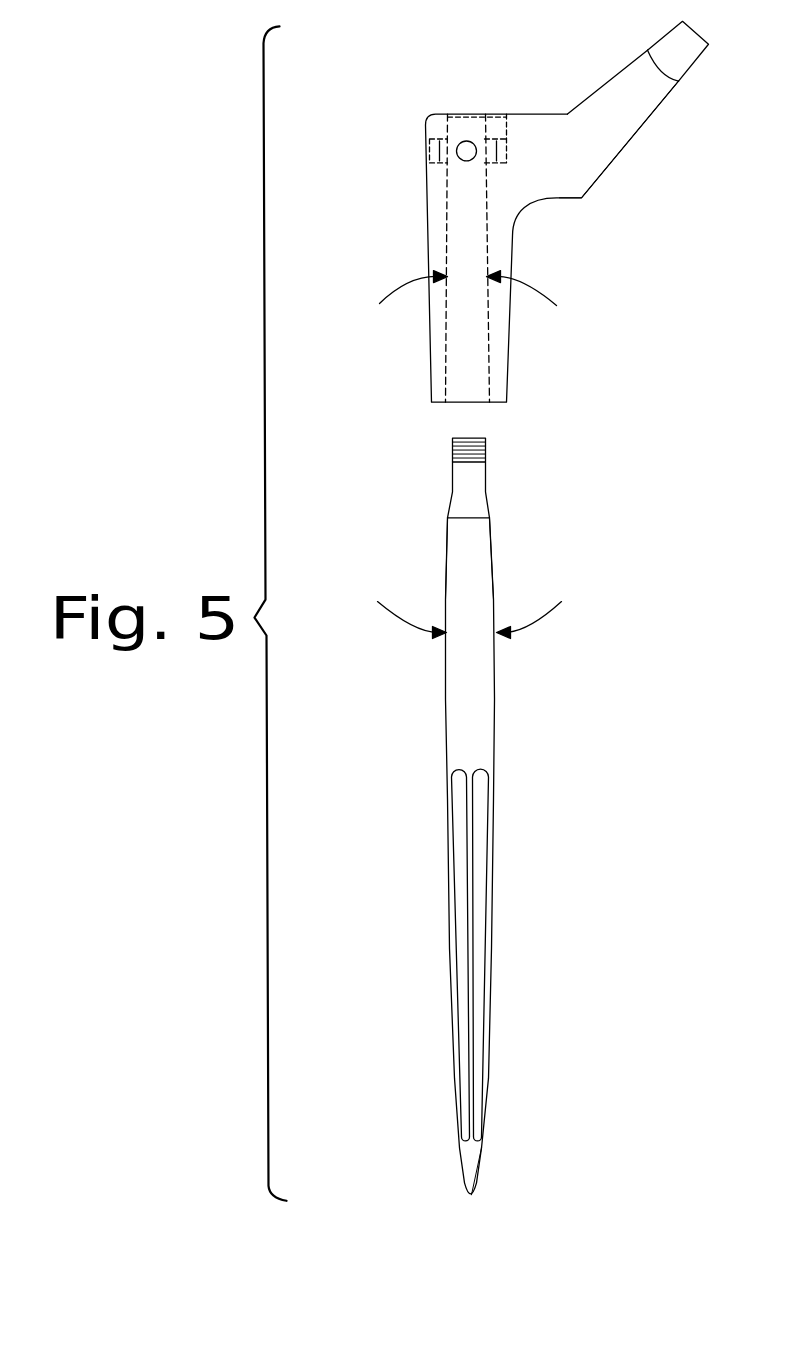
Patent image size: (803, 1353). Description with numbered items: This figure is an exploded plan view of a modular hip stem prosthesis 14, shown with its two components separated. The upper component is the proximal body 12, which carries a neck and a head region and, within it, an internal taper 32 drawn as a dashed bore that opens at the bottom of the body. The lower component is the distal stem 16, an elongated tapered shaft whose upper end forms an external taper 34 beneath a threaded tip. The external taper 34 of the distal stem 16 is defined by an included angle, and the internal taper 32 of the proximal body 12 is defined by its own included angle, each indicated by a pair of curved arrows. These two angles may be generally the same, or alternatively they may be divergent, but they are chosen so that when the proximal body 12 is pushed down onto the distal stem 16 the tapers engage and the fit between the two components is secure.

The prosthesis 14 is at (372, 128).
The proximal body 12 is at (542, 199).
The internal taper 32 is at (448, 332).
The distal stem 16 is at (495, 732).
The external taper 34 is at (447, 577).